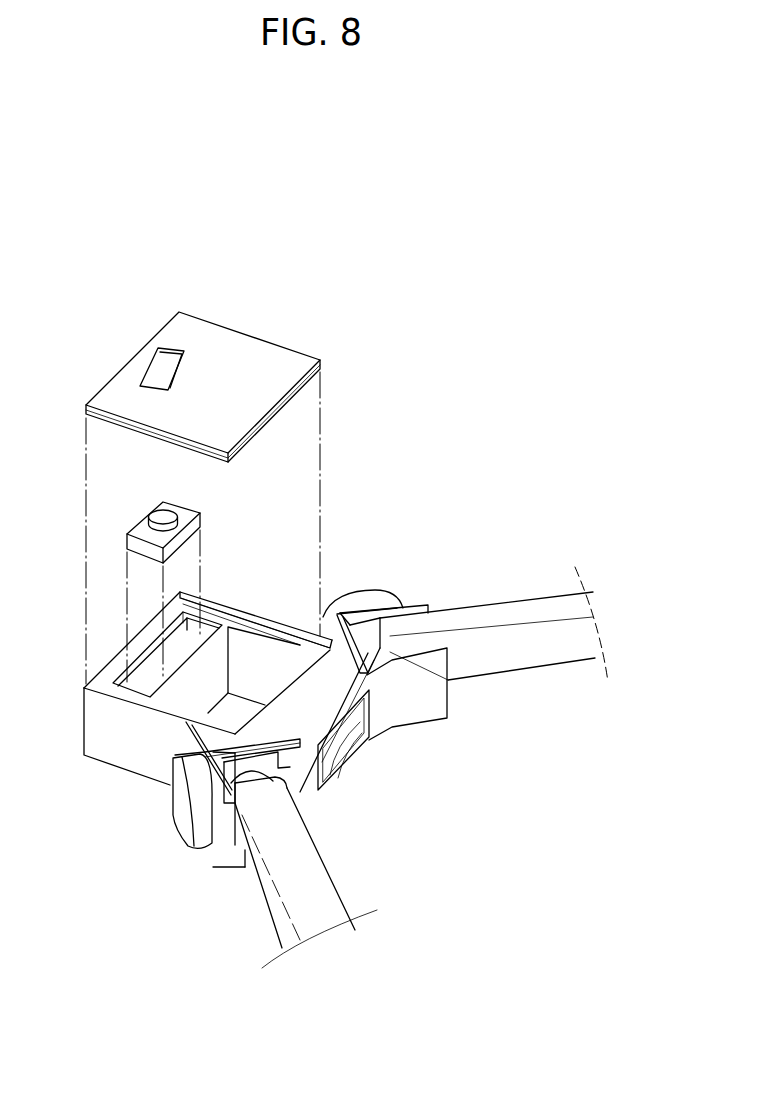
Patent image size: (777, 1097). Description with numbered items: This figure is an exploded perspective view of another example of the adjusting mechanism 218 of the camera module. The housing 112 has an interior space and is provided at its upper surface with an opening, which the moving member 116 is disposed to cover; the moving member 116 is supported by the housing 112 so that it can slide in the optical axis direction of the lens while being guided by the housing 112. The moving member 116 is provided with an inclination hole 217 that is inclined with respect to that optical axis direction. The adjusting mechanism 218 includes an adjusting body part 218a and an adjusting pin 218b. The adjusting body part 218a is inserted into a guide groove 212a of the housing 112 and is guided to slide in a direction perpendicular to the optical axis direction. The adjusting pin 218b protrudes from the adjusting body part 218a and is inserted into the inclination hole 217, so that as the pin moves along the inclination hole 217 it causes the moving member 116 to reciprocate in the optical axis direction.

The housing 112 is at (182, 700).
The moving member 116 is at (242, 333).
The inclination hole 217 is at (152, 364).
The adjusting mechanism 218 is at (218, 536).
The adjusting body part 218a is at (177, 541).
The adjusting pin 218b is at (172, 519).
The guide groove 212a is at (142, 685).